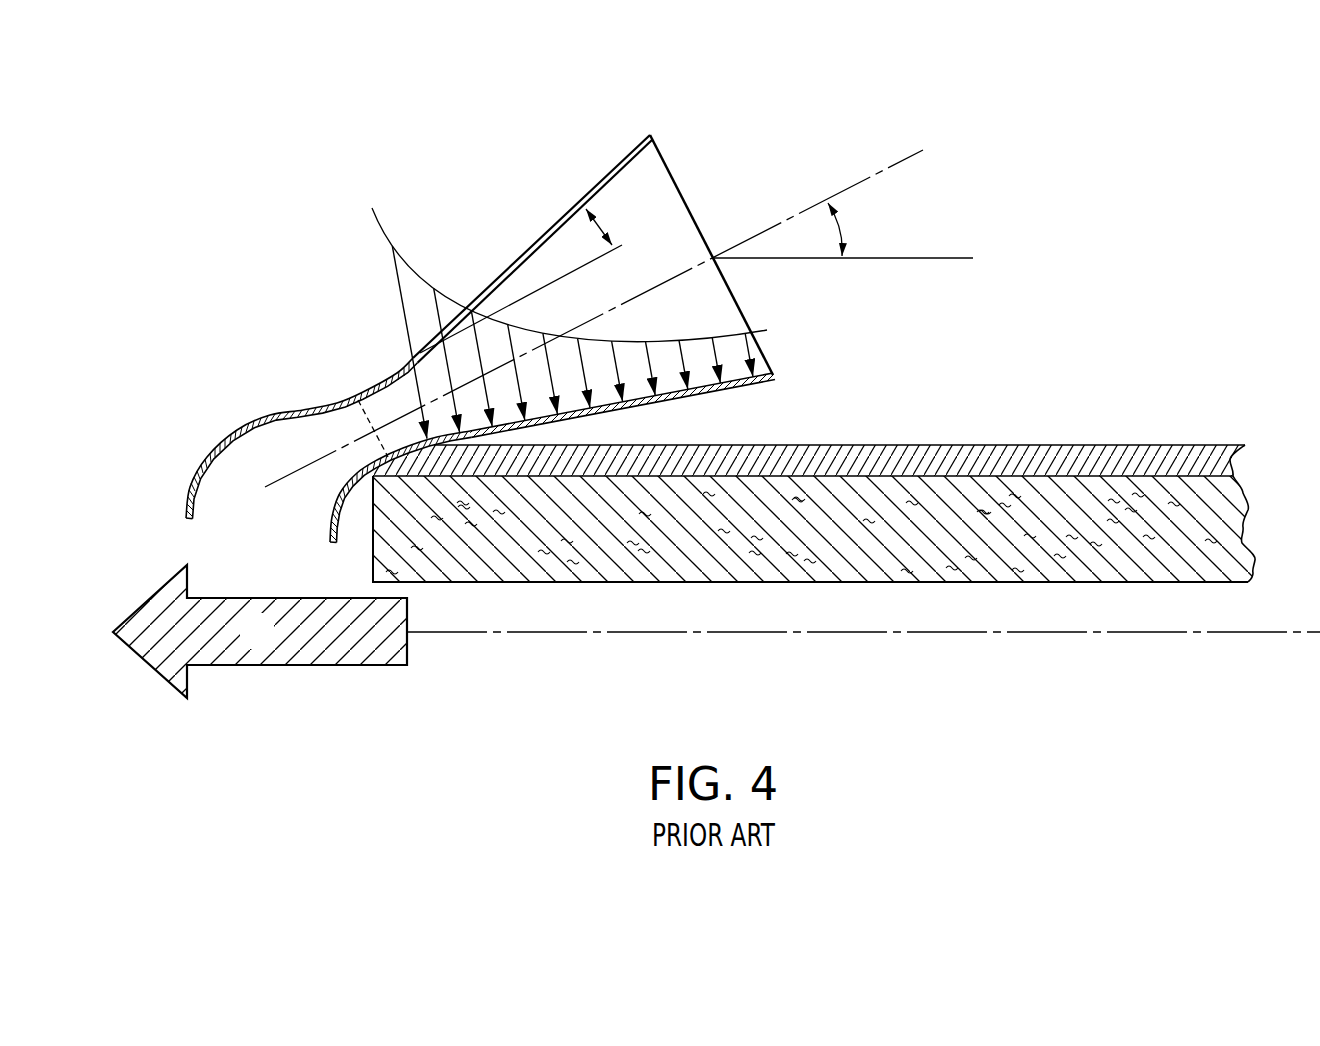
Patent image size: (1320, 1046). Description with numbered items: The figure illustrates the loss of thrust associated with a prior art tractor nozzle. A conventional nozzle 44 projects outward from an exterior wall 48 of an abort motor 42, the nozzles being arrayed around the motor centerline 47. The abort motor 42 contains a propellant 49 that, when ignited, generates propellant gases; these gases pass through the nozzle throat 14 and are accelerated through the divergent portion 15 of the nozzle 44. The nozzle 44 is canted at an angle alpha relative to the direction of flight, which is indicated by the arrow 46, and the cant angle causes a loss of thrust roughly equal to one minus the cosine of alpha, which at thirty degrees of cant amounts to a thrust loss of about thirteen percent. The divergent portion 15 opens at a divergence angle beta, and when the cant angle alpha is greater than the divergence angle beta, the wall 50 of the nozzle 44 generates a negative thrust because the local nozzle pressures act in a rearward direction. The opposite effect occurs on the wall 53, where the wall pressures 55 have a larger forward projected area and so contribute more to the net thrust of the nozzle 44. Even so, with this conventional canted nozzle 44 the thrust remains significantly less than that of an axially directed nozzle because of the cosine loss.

The nozzle throat 14 is at (370, 415).
The divergent portion 15 is at (645, 262).
The abort motor 42 is at (809, 495).
The nozzle 44 is at (569, 255).
The direction of travel arrow 46 is at (272, 646).
The motor centerline 47 is at (1217, 633).
The exterior wall 48 is at (1143, 458).
The propellant 49 is at (862, 582).
The wall 50 is at (703, 394).
The wall 53 is at (593, 187).
The wall pressures 55 is at (411, 276).